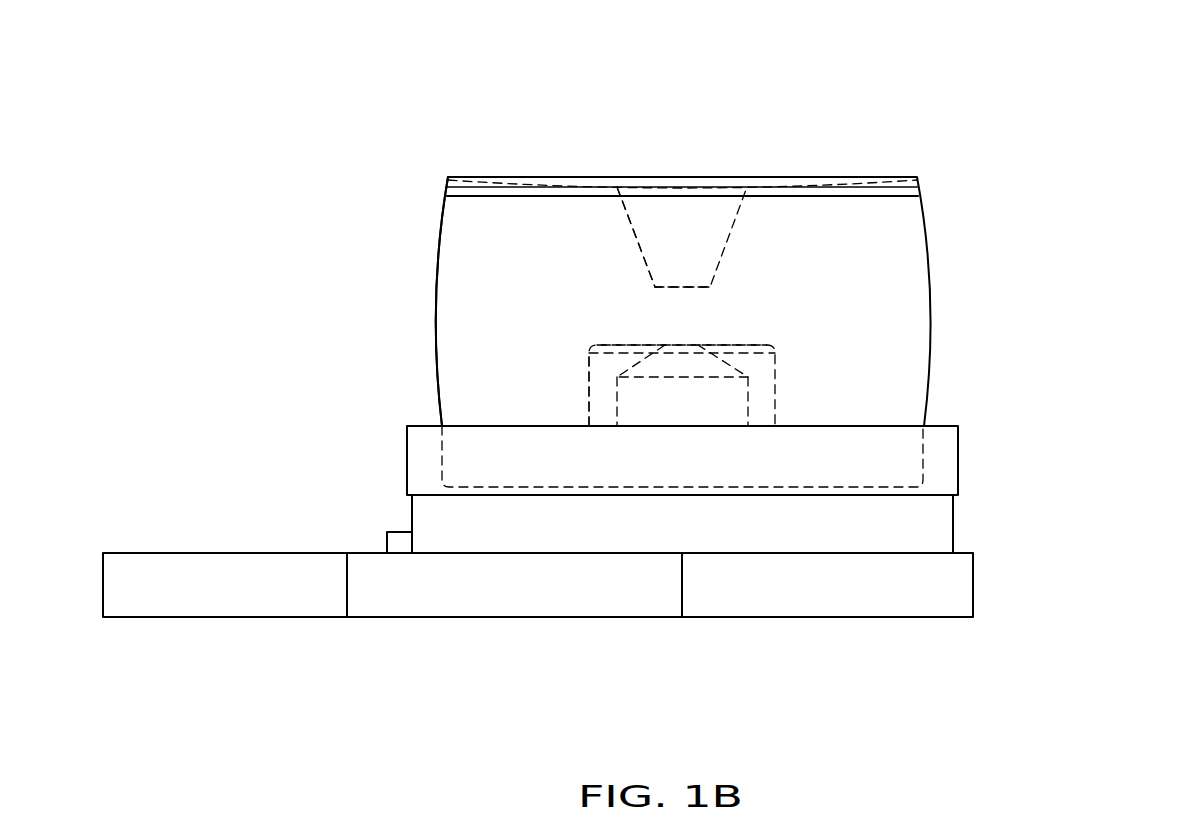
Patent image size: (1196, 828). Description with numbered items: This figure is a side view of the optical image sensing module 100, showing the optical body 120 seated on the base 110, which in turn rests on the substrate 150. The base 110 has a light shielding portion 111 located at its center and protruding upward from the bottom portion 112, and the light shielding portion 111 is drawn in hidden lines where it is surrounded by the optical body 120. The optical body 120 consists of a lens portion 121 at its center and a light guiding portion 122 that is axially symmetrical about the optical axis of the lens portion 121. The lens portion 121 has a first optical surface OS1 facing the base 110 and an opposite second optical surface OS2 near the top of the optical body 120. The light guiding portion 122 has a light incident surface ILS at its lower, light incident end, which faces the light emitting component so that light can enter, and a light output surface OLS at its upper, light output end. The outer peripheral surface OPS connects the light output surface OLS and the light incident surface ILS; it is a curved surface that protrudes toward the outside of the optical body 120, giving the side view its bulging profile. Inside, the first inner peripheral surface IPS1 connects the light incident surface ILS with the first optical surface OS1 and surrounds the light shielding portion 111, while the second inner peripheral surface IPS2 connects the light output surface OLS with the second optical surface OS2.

The optical image sensing module 100 is at (1166, 750).
The base 110 is at (727, 497).
The light shielding portion 111 is at (727, 403).
The bottom portion 112 is at (945, 460).
The optical body 120 is at (661, 260).
The lens portion 121 is at (683, 312).
The light guiding portion 122 is at (505, 285).
The substrate 150 is at (950, 585).
The light output surface OLS is at (562, 183).
The outer peripheral surface OPS is at (435, 338).
The first optical surface OS1 is at (625, 345).
The second optical surface OS2 is at (677, 280).
The first inner peripheral surface IPS1 is at (590, 405).
The second inner peripheral surface IPS2 is at (630, 217).
The light incident surface ILS is at (515, 497).